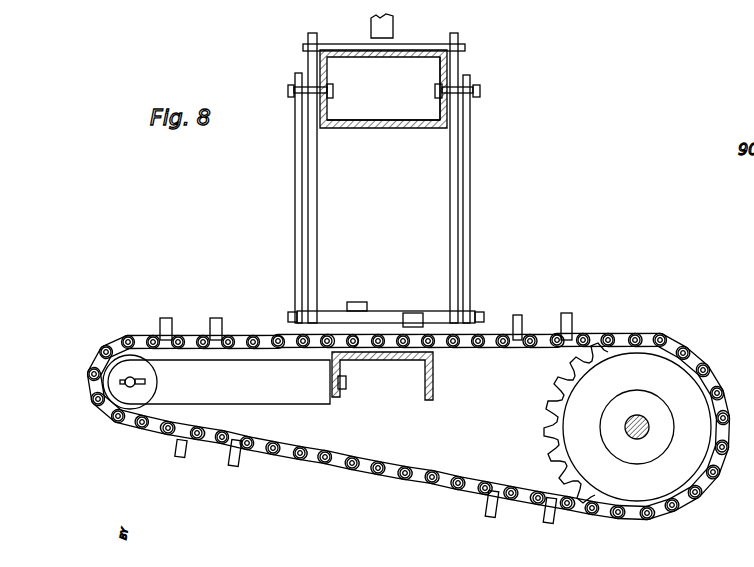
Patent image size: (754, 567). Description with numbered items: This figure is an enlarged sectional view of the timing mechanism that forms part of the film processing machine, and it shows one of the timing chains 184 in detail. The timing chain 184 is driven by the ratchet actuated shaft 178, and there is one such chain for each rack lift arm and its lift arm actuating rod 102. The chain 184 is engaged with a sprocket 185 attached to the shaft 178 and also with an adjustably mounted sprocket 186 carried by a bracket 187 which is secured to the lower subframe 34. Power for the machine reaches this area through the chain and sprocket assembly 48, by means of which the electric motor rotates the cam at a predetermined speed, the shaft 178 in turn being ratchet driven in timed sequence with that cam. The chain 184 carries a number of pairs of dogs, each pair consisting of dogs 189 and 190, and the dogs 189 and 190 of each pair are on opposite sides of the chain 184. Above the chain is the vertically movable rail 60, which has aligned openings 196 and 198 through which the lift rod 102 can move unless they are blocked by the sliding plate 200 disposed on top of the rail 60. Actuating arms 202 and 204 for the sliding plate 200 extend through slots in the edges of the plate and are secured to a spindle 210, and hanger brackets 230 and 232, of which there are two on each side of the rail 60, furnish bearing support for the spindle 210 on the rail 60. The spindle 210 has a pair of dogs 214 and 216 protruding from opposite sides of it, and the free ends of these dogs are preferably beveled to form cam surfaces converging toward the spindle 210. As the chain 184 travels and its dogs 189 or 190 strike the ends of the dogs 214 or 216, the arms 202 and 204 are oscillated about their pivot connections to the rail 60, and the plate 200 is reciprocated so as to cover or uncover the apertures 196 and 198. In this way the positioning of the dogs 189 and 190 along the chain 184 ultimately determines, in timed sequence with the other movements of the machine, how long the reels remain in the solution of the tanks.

The lift arm actuating rod 102 is at (393, 23).
The sliding plate 200 is at (452, 50).
The opening in rail 196 is at (378, 57).
The opening in rail 198 is at (372, 128).
The vertically movable rail 60 is at (428, 128).
The actuating arm 202 is at (315, 235).
The actuating arm 204 is at (453, 215).
The hanger bracket 230 is at (300, 207).
The hanger bracket 232 is at (470, 202).
The spindle 210 is at (382, 313).
The dog 214 is at (353, 300).
The dog 216 is at (415, 313).
The bracket 187 is at (240, 388).
The adjustably mounted sprocket 186 is at (133, 422).
The lower subframe 34 is at (337, 395).
The timing chain 184 is at (595, 332).
The dog 189 is at (513, 308).
The dog 190 is at (567, 313).
The chain and sprocket assembly 48 is at (645, 409).
The sprocket 185 is at (627, 409).
The shaft 178 is at (630, 437).